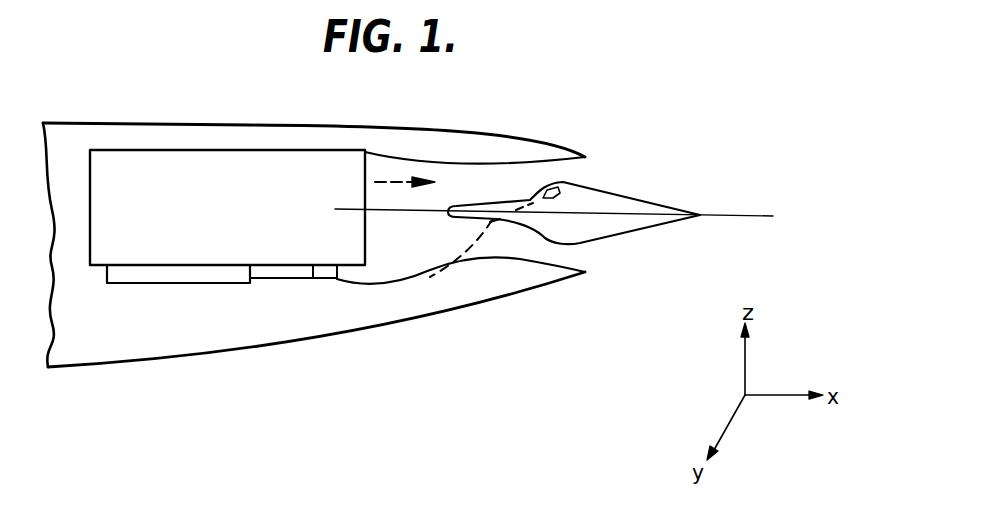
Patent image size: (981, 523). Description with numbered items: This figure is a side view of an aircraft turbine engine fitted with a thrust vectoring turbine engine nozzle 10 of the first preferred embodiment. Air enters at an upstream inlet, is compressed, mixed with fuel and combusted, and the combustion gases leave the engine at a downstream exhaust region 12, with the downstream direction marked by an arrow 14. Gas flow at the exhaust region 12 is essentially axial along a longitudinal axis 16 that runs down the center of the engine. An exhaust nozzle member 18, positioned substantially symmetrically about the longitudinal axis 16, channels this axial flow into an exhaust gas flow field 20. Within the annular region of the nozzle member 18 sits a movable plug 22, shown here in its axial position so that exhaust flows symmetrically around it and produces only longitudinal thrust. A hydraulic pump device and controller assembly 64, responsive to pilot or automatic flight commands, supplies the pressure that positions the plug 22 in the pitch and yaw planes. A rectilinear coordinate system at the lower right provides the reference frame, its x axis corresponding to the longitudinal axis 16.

The turbine engine nozzle 10 is at (598, 143).
The exhaust region 12 is at (488, 180).
The arrow 14 is at (394, 180).
The longitudinal axis 16 is at (393, 215).
The exhaust nozzle member 18 is at (530, 153).
The exhaust gas flow field 20 is at (557, 172).
The plug 22 is at (597, 198).
The hydraulic pump device and controller assembly 64 is at (178, 277).